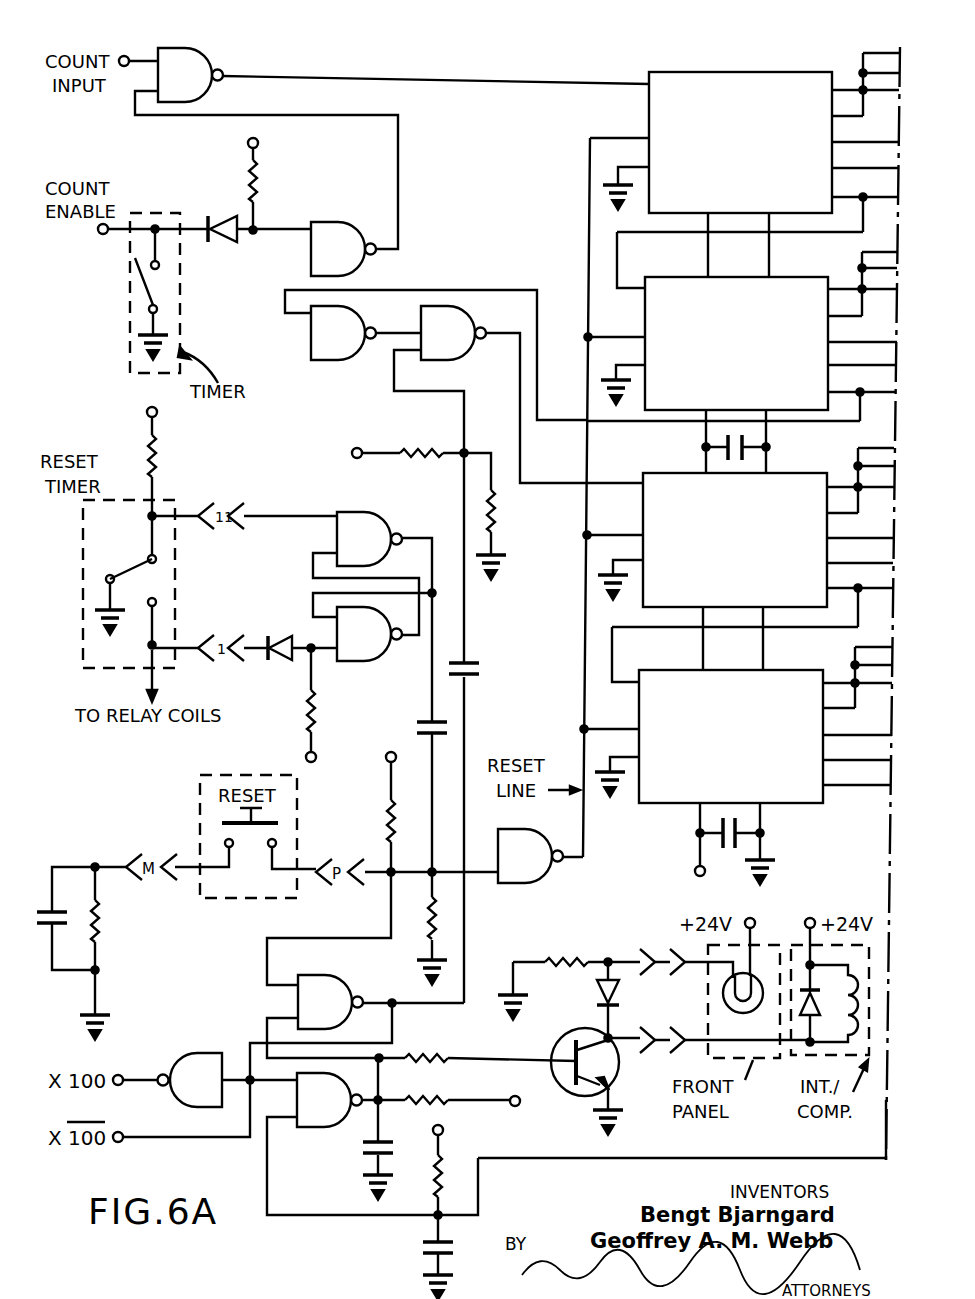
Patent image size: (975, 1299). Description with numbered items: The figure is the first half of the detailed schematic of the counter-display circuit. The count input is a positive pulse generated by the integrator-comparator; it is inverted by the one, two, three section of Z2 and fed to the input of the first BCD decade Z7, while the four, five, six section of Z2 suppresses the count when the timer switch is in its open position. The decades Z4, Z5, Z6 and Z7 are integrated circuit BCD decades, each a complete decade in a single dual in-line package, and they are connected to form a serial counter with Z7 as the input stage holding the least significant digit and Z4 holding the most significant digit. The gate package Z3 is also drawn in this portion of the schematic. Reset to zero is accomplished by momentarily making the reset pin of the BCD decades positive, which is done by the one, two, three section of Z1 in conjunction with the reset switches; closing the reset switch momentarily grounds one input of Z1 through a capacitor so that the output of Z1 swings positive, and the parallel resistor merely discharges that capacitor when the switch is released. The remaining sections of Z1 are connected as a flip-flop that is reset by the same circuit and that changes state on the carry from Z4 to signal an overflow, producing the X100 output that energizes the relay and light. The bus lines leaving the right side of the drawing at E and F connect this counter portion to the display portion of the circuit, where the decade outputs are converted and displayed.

The integrated circuit Z1 is at (515, 884).
The integrated circuit Z2 is at (208, 41).
The integrated circuit Z3 is at (346, 512).
The BCD decade Z4 is at (743, 766).
The BCD decade Z5 is at (746, 565).
The BCD decade Z6 is at (742, 362).
The BCD decade Z7 is at (751, 170).
The connection bus E to display section E is at (895, 588).
The connection line F to display section F is at (685, 1154).